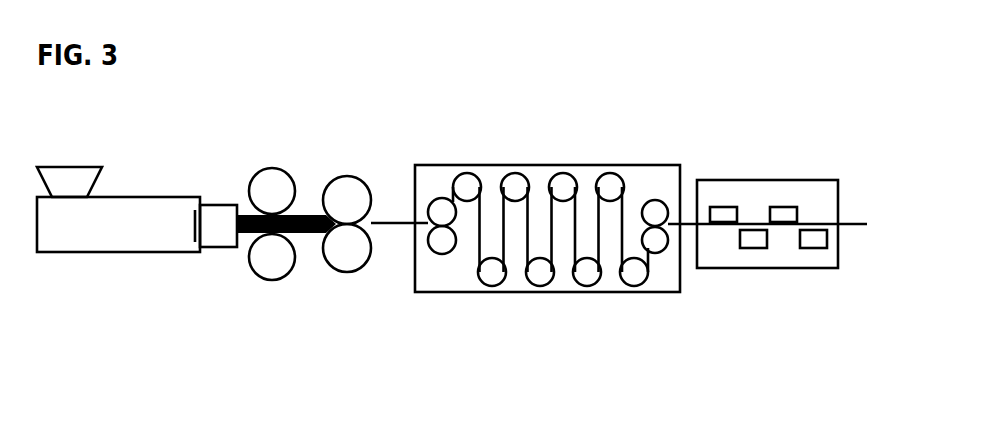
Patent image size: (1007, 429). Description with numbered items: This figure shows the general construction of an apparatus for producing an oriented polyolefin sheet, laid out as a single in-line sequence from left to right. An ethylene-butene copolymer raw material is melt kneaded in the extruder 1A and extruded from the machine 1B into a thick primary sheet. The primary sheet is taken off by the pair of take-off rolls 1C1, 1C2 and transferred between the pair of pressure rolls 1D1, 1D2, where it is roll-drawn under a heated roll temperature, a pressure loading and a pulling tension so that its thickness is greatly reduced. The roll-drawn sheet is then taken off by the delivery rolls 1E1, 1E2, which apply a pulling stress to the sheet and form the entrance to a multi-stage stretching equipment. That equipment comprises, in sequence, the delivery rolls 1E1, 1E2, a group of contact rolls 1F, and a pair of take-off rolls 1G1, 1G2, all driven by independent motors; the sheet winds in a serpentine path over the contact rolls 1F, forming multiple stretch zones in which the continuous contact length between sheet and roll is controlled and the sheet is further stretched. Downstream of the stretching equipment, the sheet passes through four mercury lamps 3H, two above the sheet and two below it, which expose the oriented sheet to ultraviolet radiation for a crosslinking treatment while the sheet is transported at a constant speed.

The extruder 1A is at (148, 207).
The machine 1B is at (220, 208).
The take-off roll 1C1 is at (272, 182).
The take-off roll 1C2 is at (277, 258).
The pressure roll 1D1 is at (352, 192).
The pressure roll 1D2 is at (352, 257).
The delivery roll 1E1 is at (440, 210).
The delivery roll 1E2 is at (443, 247).
The group of contact rolls 1F is at (563, 178).
The take-off roll 1G1 is at (657, 210).
The take-off roll 1G2 is at (658, 247).
The mercury lamps 3H is at (757, 190).